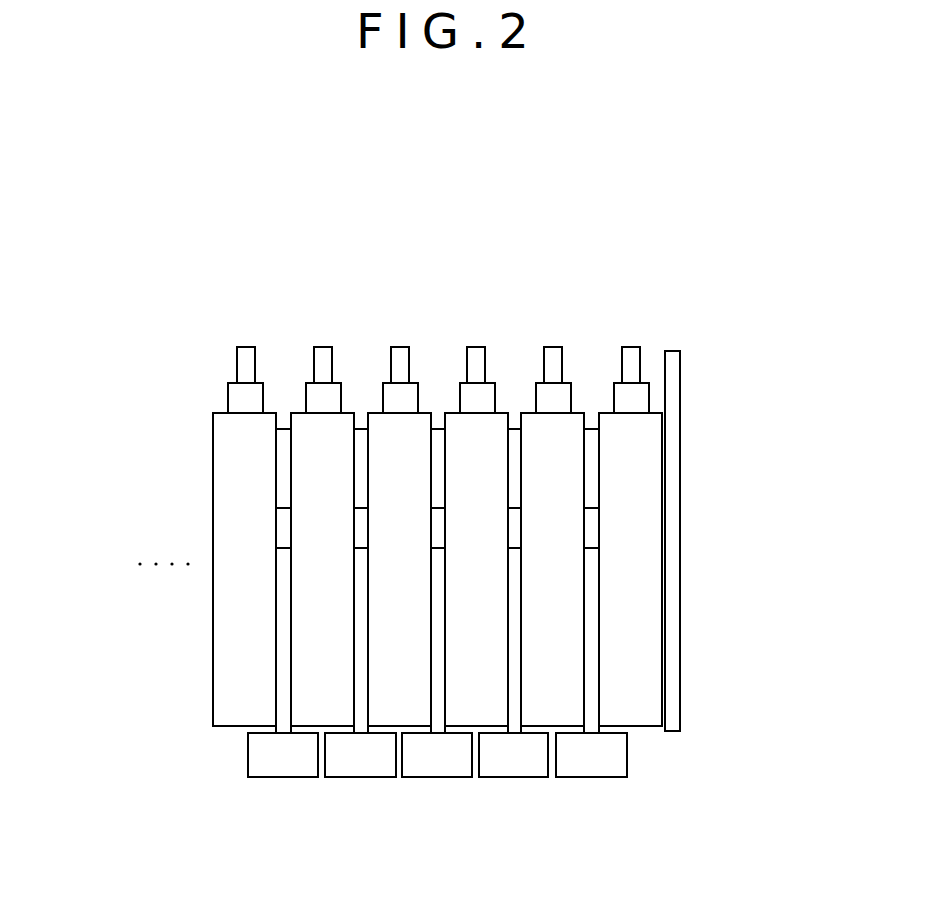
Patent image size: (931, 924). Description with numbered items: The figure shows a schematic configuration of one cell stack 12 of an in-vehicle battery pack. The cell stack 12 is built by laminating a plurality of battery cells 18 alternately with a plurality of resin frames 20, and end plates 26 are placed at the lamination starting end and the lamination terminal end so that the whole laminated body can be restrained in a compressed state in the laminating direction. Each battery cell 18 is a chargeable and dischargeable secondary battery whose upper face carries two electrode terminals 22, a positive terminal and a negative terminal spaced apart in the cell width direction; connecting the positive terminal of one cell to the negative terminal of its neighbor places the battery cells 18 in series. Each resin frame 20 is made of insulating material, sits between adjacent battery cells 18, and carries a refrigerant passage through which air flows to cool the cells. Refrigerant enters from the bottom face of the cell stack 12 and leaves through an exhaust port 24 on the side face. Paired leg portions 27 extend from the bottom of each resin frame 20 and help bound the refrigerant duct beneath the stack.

The cell stack 12 is at (293, 306).
The battery cell 18 is at (481, 481).
The resin frame 20 is at (438, 430).
The electrode terminal 22 is at (633, 355).
The exhaust port 24 is at (280, 526).
The end plate 26 is at (675, 458).
The leg portion 27 is at (432, 767).